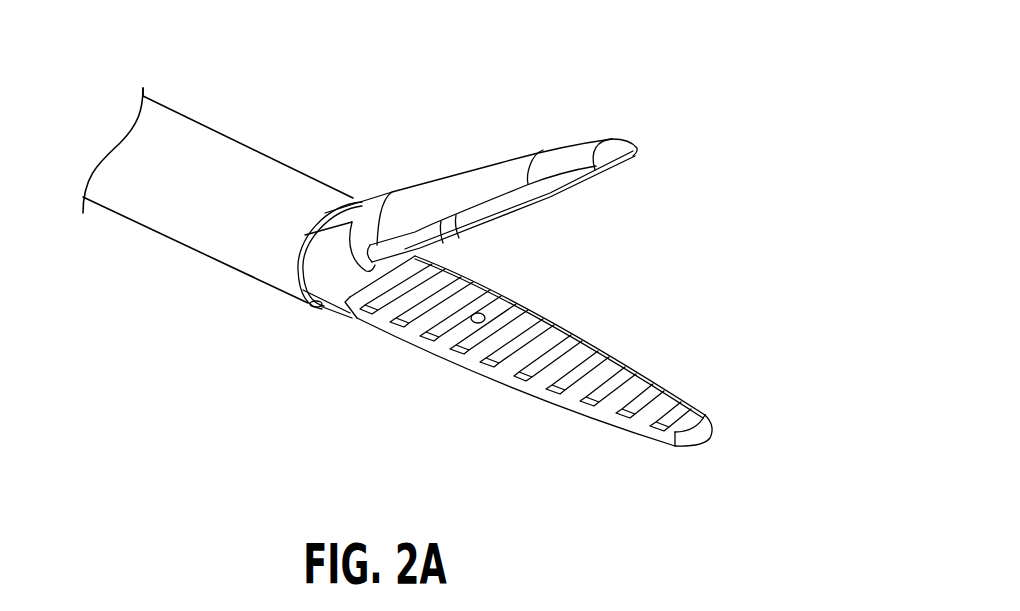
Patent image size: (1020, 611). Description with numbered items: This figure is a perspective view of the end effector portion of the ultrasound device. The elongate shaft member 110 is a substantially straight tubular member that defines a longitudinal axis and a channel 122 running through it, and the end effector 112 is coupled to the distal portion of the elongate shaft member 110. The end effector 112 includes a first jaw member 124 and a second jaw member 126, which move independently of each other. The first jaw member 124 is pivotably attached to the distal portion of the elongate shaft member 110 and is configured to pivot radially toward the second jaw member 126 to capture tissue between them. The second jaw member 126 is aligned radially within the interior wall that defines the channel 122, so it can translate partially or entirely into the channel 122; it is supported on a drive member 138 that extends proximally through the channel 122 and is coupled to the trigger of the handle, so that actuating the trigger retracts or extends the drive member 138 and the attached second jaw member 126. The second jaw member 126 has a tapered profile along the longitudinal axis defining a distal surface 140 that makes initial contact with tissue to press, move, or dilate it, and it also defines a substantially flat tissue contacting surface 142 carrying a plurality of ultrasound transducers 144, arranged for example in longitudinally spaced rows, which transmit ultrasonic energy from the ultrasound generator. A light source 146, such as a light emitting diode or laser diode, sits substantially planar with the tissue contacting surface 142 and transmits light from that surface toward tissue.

The elongate shaft member 110 is at (187, 88).
The end effector 112 is at (509, 79).
The channel 122 is at (306, 306).
The first jaw member 124 is at (434, 152).
The second jaw member 126 is at (556, 389).
The drive member 138 is at (336, 309).
The distal surface 140 is at (712, 434).
The tissue contacting surface 142 is at (617, 318).
The ultrasound transducers 144 is at (673, 413).
The light source 146 is at (484, 311).